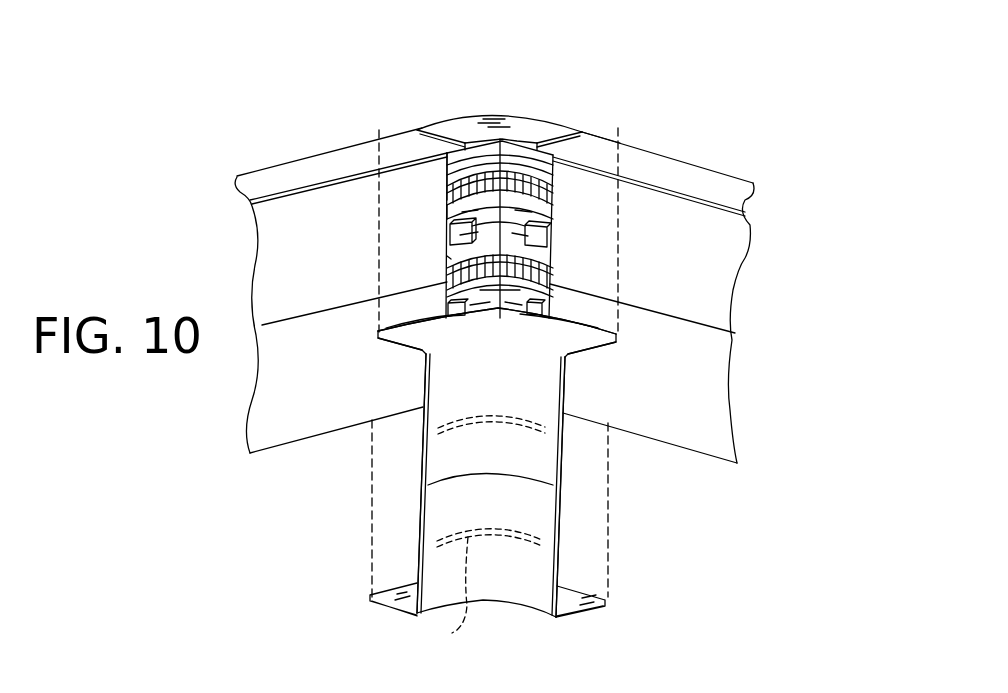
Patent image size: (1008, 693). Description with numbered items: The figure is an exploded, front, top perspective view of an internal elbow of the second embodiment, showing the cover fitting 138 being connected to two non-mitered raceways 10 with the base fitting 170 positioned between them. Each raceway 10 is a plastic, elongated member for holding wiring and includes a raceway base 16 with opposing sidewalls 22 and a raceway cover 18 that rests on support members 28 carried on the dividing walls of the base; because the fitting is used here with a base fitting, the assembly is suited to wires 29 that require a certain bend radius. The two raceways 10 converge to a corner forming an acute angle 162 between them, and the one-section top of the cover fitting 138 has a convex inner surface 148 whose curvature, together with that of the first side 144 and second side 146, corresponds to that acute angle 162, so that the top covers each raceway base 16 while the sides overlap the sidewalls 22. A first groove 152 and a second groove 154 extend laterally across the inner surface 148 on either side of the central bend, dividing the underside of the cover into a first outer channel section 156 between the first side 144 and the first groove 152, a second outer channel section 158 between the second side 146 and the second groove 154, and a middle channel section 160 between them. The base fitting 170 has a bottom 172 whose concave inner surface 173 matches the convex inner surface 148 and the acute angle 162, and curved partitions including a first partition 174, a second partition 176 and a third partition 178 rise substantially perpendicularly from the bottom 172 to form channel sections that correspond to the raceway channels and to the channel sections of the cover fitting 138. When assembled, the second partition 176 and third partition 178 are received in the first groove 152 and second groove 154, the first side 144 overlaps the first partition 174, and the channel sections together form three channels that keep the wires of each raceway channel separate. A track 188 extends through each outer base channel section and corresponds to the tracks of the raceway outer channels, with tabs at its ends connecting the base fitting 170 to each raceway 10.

The raceway 10 is at (301, 134).
The raceway base 16 is at (630, 150).
The raceway cover 18 is at (298, 249).
The sidewall 22 is at (292, 174).
The support member 28 is at (448, 233).
The wires 29 is at (553, 188).
The cover fitting 138 is at (507, 616).
The first side 144 is at (427, 340).
The second side 146 is at (560, 597).
The convex inner surface 148 is at (453, 465).
The first groove 152 is at (503, 418).
The second groove 154 is at (439, 595).
The first outer channel section 156 is at (563, 388).
The second outer channel section 158 is at (565, 569).
The middle channel section 160 is at (565, 485).
The acute angle 162 is at (508, 146).
The base fitting 170 is at (452, 112).
The bottom 172 is at (447, 190).
The concave inner surface 173 is at (448, 258).
The first partition 174 is at (497, 125).
The second partition 176 is at (447, 215).
The third partition 178 is at (550, 318).
The track 188 is at (560, 177).